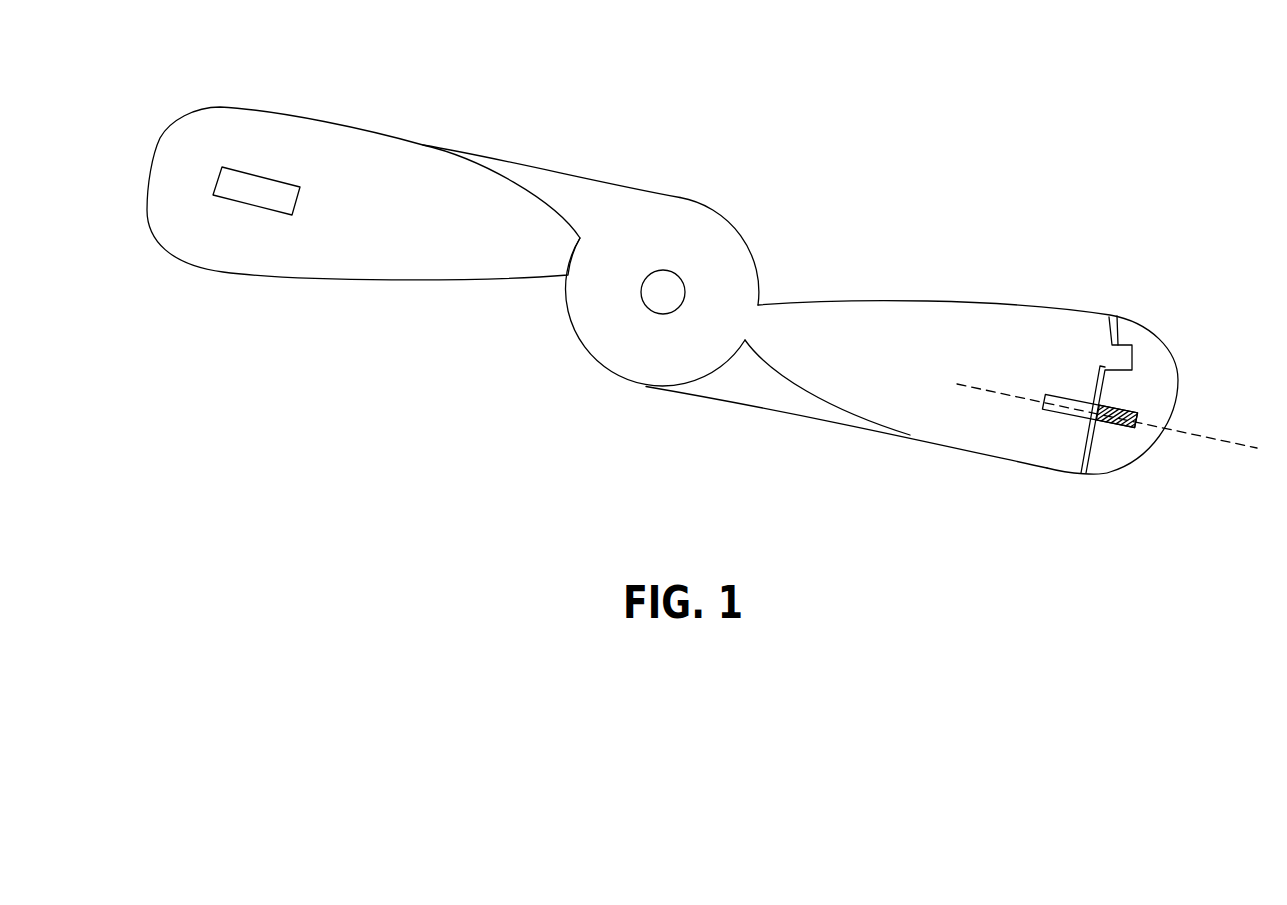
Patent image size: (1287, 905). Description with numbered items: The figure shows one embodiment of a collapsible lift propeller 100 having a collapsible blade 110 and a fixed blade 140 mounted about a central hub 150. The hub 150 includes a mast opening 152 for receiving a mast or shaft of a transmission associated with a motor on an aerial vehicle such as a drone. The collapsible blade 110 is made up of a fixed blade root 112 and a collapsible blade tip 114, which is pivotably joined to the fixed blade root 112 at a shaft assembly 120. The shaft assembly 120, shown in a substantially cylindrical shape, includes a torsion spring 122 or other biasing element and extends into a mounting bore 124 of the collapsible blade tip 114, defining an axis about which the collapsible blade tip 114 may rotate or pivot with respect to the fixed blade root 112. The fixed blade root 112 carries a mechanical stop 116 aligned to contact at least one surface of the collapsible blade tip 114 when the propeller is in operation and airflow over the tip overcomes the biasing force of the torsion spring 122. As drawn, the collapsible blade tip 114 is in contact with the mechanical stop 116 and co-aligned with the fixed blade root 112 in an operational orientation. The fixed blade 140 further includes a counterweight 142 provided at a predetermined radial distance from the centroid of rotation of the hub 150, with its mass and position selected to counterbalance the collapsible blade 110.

The lift propeller 100 is at (778, 42).
The collapsible blade 110 is at (992, 192).
The fixed blade root 112 is at (1013, 325).
The collapsible blade tip 114 is at (1163, 378).
The mechanical stop 116 is at (1120, 353).
The shaft assembly 120 is at (1063, 414).
The torsion spring 122 is at (1123, 425).
The mounting bore 124 is at (1145, 396).
The fixed blade 140 is at (412, 98).
The counterweight 142 is at (257, 192).
The hub 150 is at (707, 247).
The mast opening 152 is at (658, 293).